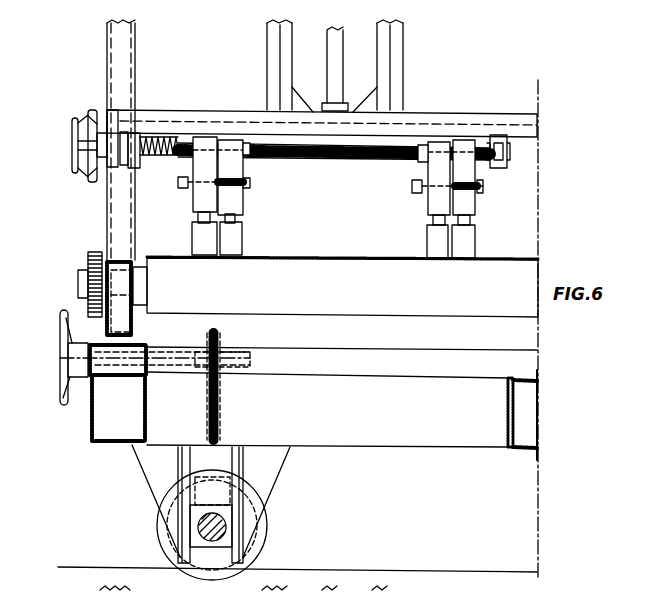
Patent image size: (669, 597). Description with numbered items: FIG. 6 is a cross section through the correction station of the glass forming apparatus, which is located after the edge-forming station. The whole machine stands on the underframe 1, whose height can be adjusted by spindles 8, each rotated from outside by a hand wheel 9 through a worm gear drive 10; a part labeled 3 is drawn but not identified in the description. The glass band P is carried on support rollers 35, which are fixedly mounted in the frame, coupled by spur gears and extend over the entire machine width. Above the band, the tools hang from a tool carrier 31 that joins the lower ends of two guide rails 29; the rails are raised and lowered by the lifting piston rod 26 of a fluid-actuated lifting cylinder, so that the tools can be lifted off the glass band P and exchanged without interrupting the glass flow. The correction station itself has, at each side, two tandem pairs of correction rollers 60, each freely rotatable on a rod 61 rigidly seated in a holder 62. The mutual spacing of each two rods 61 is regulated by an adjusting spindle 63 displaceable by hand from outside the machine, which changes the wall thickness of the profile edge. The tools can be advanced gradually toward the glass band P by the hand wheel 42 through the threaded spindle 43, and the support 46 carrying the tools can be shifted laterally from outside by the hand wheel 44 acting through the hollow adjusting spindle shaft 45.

The underframe 1 is at (369, 440).
The hanger bracket 3 is at (262, 529).
The spindle 8 is at (207, 397).
The hand wheel 9 is at (62, 401).
The worm gear drive 10 is at (229, 378).
The lifting piston rod 26 is at (334, 93).
The guide rail 29 is at (270, 79).
The tool carrier 31 is at (188, 112).
The support roller 35 is at (364, 277).
The hand wheel 42 is at (76, 124).
The threaded spindle 43 is at (320, 158).
The hand wheel 44 is at (92, 180).
The hollow shaft 45 is at (159, 166).
The support 46 is at (497, 168).
The correction roller 60 is at (222, 238).
The rod 61 is at (232, 225).
The holder 62 is at (232, 207).
The adjusting spindle 63 is at (247, 184).
The glass band P is at (318, 257).